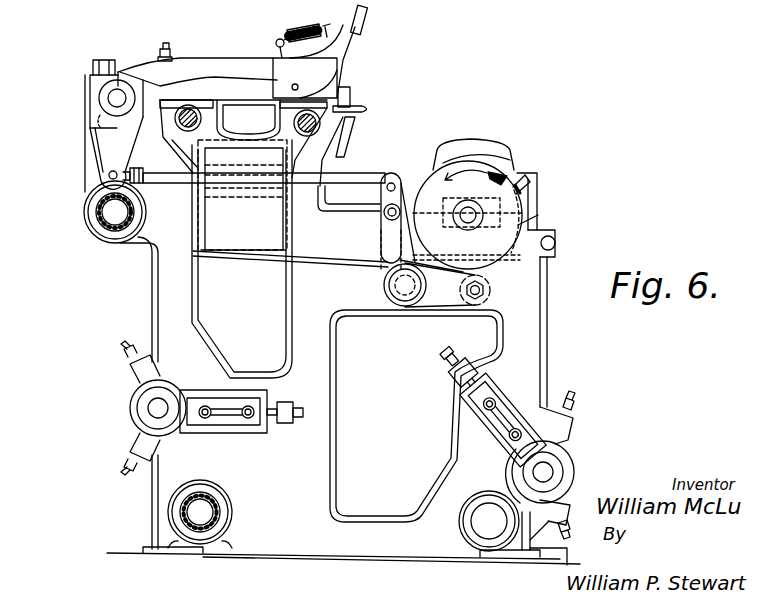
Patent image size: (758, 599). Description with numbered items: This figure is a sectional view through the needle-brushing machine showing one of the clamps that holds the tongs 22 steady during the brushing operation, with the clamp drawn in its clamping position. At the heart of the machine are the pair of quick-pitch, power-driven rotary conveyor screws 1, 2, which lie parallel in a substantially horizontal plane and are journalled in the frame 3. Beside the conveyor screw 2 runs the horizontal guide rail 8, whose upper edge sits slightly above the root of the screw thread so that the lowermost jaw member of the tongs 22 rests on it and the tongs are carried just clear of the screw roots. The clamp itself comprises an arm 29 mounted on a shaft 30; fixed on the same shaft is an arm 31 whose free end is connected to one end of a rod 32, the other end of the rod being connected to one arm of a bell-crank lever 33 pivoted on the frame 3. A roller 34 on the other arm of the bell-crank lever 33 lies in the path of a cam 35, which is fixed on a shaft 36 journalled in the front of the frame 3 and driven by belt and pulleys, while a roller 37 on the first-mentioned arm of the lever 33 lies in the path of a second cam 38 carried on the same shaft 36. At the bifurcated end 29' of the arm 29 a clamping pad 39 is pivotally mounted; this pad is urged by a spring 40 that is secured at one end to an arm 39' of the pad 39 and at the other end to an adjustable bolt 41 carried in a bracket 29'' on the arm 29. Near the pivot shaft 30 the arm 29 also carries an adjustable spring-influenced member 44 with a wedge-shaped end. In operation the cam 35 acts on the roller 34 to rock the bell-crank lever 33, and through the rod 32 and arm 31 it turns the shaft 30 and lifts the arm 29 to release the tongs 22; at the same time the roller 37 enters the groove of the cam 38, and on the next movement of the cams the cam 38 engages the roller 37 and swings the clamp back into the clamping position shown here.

The rotary conveyor screw 1 is at (195, 127).
The rotary conveyor screw 2 is at (308, 134).
The frame 3 is at (403, 416).
The horizontal guide rail 8 is at (347, 133).
The tongs 22 is at (368, 109).
The clamping arm 29 is at (197, 57).
The bifurcated end 29' is at (329, 75).
The bracket 29'' is at (360, 61).
The shaft 30 is at (117, 97).
The arm 31 is at (118, 147).
The rod 32 is at (165, 175).
The bell-crank lever 33 is at (383, 267).
The roller 34 is at (491, 296).
The cam 35 is at (480, 140).
The shaft 36 is at (471, 212).
The roller 37 is at (372, 217).
The cam 38 is at (518, 225).
The clamping pad 39 is at (368, 92).
The arm of the pad 39' is at (269, 40).
The spring 40 is at (300, 30).
The adjustable bolt 41 is at (325, 30).
The spring-influenced member 44 is at (178, 38).